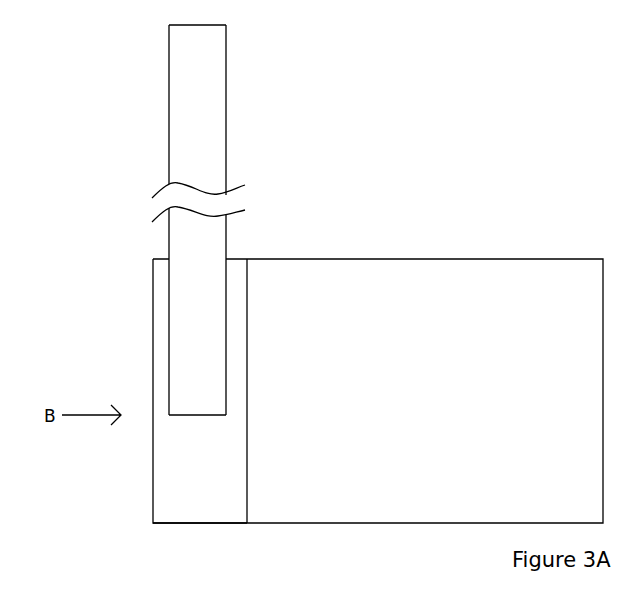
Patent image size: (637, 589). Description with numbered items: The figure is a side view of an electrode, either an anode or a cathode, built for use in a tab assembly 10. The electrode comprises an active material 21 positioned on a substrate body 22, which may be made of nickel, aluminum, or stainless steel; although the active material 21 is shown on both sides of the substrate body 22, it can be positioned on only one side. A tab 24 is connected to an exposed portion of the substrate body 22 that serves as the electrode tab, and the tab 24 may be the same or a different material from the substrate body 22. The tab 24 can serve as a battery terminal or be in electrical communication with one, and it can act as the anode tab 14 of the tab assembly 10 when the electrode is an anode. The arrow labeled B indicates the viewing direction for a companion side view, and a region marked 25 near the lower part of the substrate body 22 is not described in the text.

The tab assembly 10 is at (124, 79).
The tab 24 is at (226, 67).
The anode tab 14 is at (226, 240).
The active material 21 is at (350, 287).
The recess 25 is at (175, 454).
The substrate body 22 is at (173, 523).